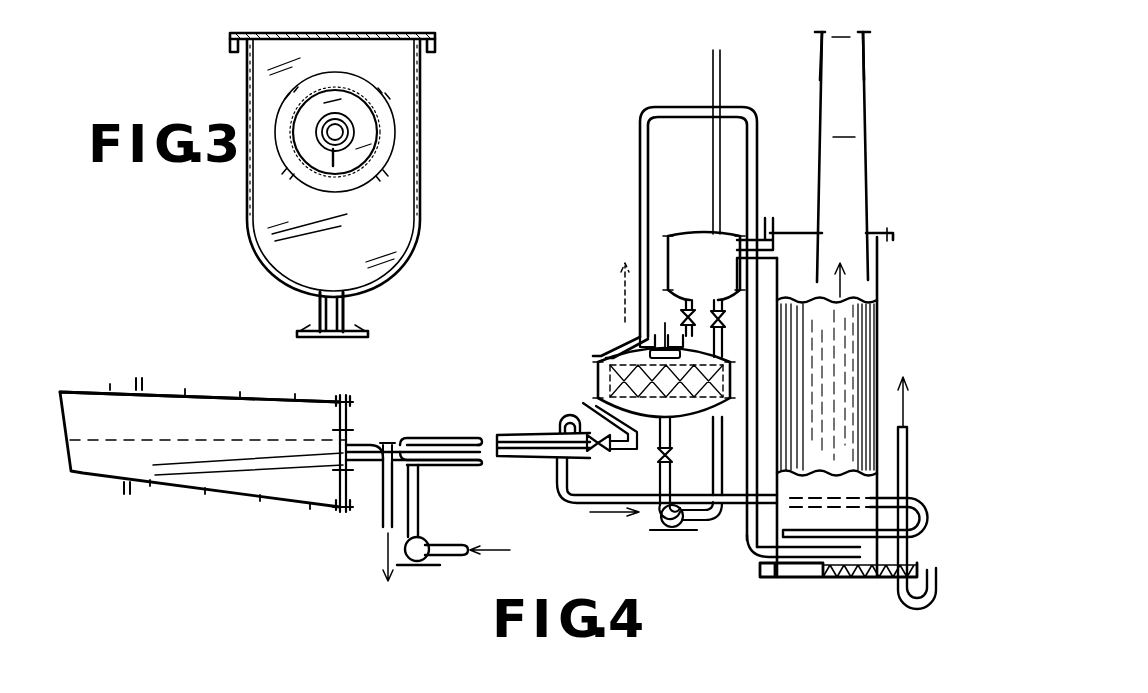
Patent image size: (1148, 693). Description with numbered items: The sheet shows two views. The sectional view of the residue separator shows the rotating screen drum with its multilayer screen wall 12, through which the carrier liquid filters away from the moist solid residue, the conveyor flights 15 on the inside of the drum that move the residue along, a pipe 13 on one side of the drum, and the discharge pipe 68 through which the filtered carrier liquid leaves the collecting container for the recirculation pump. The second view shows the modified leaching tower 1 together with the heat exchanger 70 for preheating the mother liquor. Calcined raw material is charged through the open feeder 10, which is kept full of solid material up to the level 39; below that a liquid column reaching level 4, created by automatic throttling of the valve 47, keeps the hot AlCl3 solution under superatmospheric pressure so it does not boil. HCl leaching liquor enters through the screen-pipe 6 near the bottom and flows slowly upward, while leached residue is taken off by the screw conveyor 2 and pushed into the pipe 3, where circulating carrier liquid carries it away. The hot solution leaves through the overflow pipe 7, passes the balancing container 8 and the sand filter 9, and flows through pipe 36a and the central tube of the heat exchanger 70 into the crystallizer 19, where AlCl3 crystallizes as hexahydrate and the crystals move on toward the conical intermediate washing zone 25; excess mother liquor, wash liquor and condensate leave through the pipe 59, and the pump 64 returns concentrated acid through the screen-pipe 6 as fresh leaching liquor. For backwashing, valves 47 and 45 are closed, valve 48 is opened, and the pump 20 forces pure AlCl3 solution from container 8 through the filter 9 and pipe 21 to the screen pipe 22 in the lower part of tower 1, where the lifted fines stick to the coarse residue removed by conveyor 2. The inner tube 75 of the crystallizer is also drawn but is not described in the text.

In FIG. 4, the leaching tower 1 is at (880, 337).
In FIG. 4, the screw conveyor 2 is at (858, 580).
In FIG. 4, the pipe 3 is at (908, 456).
In FIG. 4, the level 4 is at (866, 130).
In FIG. 4, the screen-pipe 6 is at (927, 516).
In FIG. 4, the overflow pipe 7 is at (770, 238).
In FIG. 4, the balancing container 8 is at (697, 233).
In FIG. 4, the sand filter 9 is at (598, 382).
In FIG. 4, the feeder 10 is at (860, 195).
In FIG. 3, the screen wall 12 is at (348, 90).
In FIG. 3, the pipe 13 is at (345, 132).
In FIG. 3, the conveyor flights 15 is at (349, 162).
In FIG. 4, the crystallizer 19 is at (242, 412).
In FIG. 4, the pump 20 is at (680, 530).
In FIG. 4, the pipe 21 is at (700, 107).
In FIG. 4, the screen pipe 22 is at (760, 556).
In FIG. 4, the intermediate washing zone 25 is at (110, 392).
In FIG. 4, the pipe 36a is at (390, 445).
In FIG. 4, the level 39 is at (862, 50).
In FIG. 4, the valve 45 is at (684, 319).
In FIG. 4, the valve 47 is at (727, 320).
In FIG. 4, the valve 48 is at (669, 456).
In FIG. 4, the U-tube 59 is at (383, 515).
In FIG. 4, the pump 64 is at (420, 544).
In FIG. 3, the discharge pipe 68 is at (326, 318).
In FIG. 4, the heat exchanger 70 is at (465, 438).
In FIG. 4, the inner tube 75 is at (178, 440).